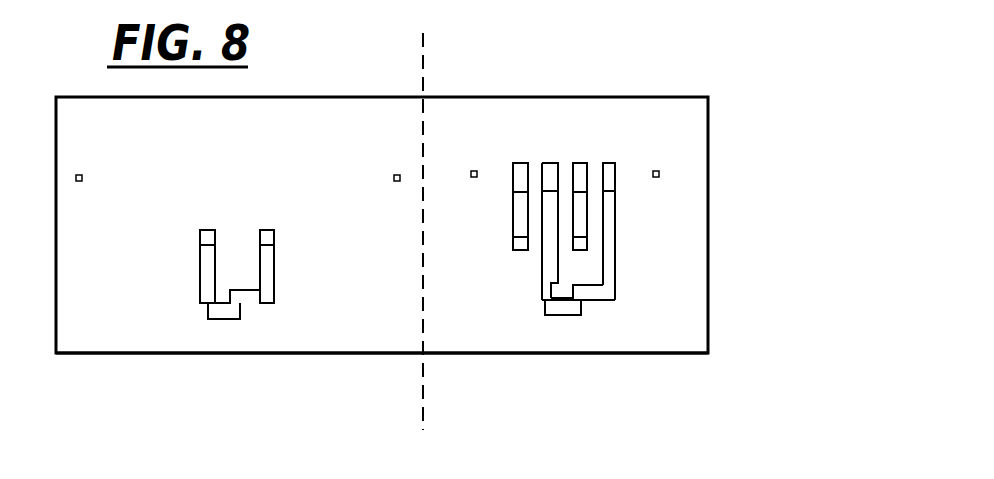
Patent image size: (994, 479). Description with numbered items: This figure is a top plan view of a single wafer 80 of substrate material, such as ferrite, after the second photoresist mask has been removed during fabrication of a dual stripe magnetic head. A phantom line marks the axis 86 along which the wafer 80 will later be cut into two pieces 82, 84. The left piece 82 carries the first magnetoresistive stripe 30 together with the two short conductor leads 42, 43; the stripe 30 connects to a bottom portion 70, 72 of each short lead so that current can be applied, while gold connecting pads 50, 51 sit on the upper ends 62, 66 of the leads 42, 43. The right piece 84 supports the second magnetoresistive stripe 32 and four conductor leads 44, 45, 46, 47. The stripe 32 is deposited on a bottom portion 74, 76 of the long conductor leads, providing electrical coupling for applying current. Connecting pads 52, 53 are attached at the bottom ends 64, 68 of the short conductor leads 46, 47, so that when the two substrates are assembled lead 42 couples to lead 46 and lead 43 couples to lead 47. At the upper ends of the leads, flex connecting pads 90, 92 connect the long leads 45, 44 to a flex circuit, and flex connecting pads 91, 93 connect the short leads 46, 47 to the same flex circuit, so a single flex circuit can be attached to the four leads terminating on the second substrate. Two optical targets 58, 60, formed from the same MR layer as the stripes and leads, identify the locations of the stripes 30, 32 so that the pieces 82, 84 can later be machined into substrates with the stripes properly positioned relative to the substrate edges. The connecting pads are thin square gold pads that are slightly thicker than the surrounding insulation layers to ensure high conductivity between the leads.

The first magnetoresistive stripe 30 is at (240, 282).
The second magnetoresistive stripe 32 is at (568, 228).
The short conductor lead 42 is at (207, 278).
The short conductor lead 43 is at (268, 278).
The long conductor lead 44 is at (552, 208).
The long conductor lead 45 is at (608, 200).
The short conductor lead 46 is at (578, 222).
The short conductor lead 47 is at (522, 203).
The connecting pad 50 is at (207, 240).
The connecting pad 51 is at (268, 240).
The connecting pad 52 is at (522, 242).
The connecting pad 53 is at (585, 243).
The optical target 58 is at (79, 175).
The optical target 60 is at (471, 172).
The upper end 62 is at (208, 228).
The bottom end 64 is at (583, 247).
The upper end 66 is at (266, 228).
The bottom end 68 is at (521, 252).
The bottom portion 70 is at (207, 306).
The bottom portion 72 is at (243, 306).
The bottom portion 74 is at (543, 308).
The bottom portion 76 is at (593, 302).
The wafer 80 is at (742, 115).
The piece 82 is at (122, 354).
The piece 84 is at (683, 354).
The axis 86 is at (427, 72).
The flex connecting pad 90 is at (609, 170).
The flex connecting pad 91 is at (582, 170).
The flex connecting pad 92 is at (549, 170).
The flex connecting pad 93 is at (518, 170).